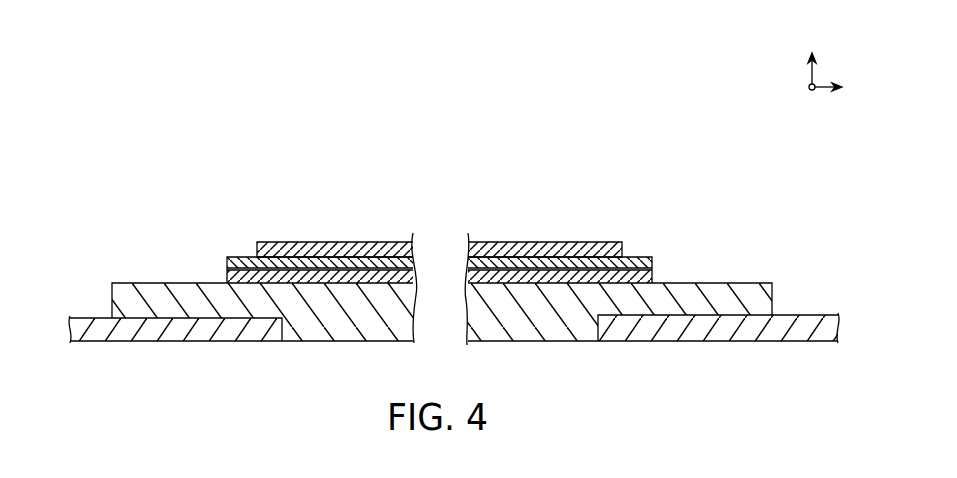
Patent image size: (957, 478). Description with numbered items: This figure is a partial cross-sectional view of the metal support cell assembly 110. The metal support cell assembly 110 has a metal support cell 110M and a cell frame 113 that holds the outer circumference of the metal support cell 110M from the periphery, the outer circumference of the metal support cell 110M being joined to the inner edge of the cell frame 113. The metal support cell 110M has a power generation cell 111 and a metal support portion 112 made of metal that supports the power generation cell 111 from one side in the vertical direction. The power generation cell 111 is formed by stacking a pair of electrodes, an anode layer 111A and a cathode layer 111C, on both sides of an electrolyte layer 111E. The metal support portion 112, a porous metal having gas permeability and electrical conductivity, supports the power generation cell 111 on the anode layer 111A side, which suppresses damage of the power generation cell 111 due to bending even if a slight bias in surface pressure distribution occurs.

The metal support cell assembly 110 is at (107, 52).
The metal support cell 110M is at (783, 152).
The power generation cell 111 is at (702, 202).
The cathode layer 111C is at (527, 251).
The electrolyte layer 111E is at (598, 262).
The anode layer 111A is at (627, 273).
The metal support portion 112 is at (703, 297).
The cell frame 113 is at (789, 322).